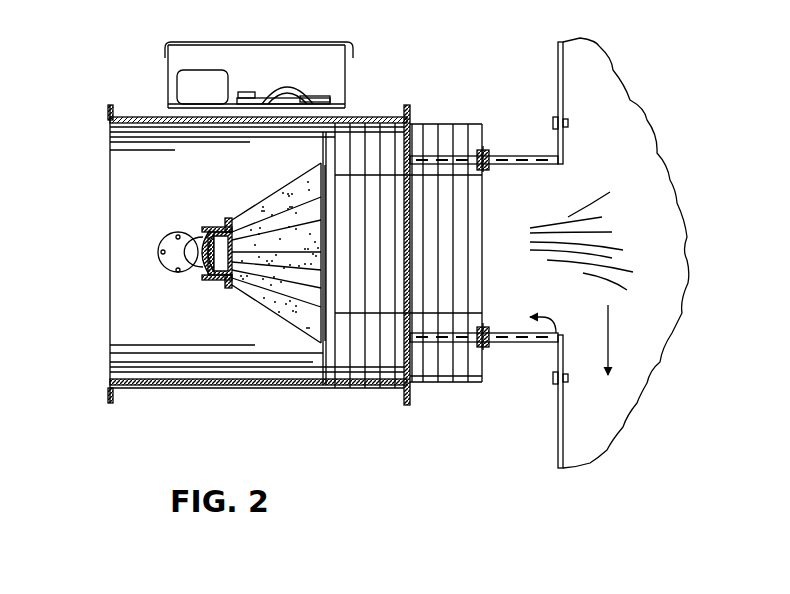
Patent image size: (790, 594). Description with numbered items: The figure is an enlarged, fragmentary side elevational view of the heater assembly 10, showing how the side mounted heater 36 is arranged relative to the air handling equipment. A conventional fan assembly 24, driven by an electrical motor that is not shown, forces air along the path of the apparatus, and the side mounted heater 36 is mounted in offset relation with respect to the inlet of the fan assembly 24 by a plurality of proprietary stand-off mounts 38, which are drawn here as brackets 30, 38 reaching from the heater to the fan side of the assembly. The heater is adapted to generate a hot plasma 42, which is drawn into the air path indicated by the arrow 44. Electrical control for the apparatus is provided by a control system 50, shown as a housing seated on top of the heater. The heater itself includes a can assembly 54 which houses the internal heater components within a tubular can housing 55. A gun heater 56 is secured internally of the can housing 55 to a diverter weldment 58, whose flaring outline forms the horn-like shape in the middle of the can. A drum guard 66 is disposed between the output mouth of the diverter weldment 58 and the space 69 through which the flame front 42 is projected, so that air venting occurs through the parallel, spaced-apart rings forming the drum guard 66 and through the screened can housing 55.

The sound system 10 is at (386, 54).
The fan assembly 24 is at (563, 78).
The lower mounting bracket 30 is at (557, 337).
The side mounted heater 36 is at (222, 200).
The stand-off mounts 38 is at (535, 157).
The hot plasma 42 is at (552, 222).
The air path 44 is at (610, 337).
The control system 50 is at (253, 41).
The can assembly 54 is at (208, 388).
The tubular can housing 55 is at (110, 248).
The gun heater 56 is at (220, 276).
The diverter weldment 58 is at (292, 305).
The drum guard 66 is at (457, 363).
The space 69 is at (465, 228).